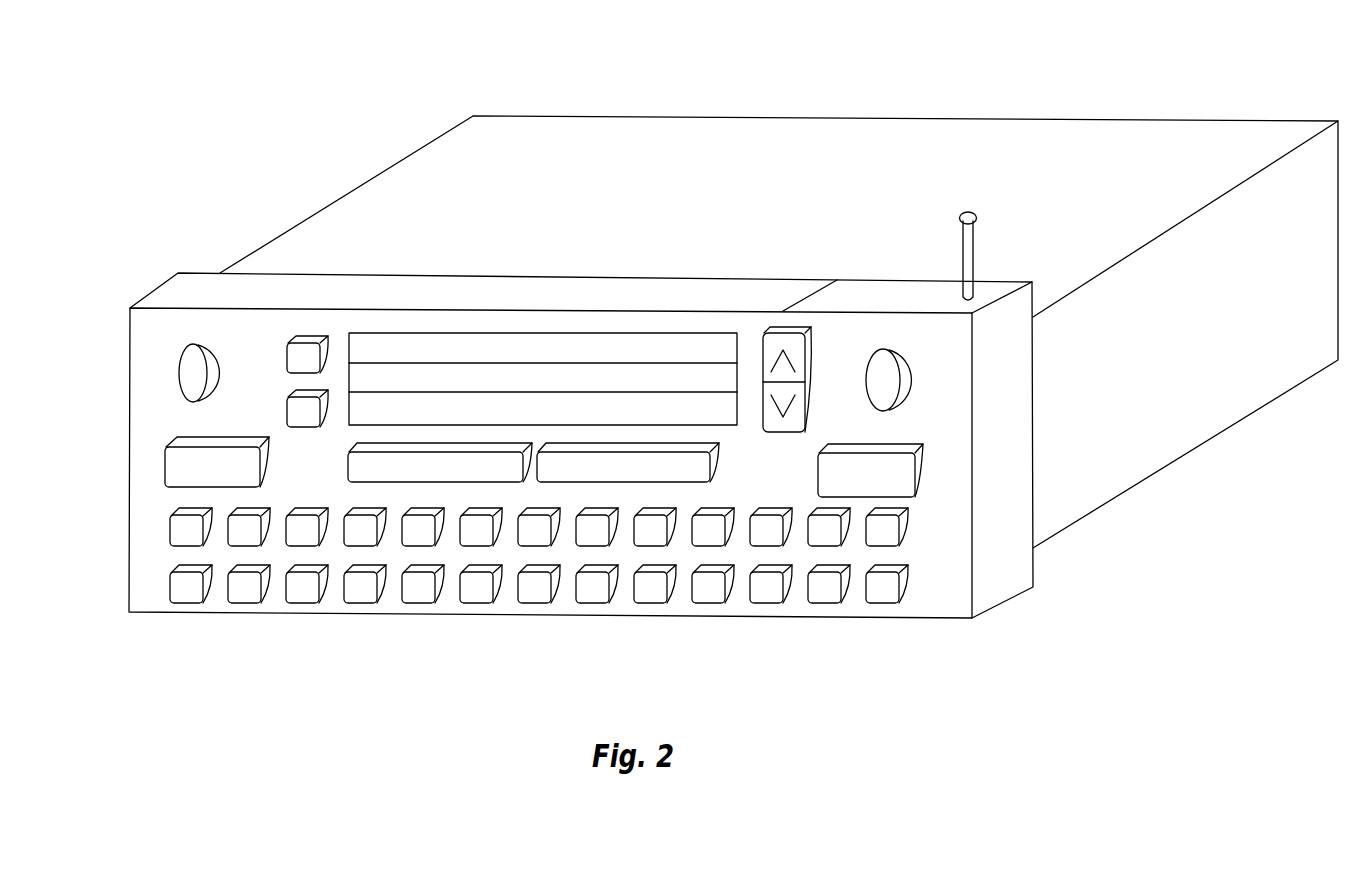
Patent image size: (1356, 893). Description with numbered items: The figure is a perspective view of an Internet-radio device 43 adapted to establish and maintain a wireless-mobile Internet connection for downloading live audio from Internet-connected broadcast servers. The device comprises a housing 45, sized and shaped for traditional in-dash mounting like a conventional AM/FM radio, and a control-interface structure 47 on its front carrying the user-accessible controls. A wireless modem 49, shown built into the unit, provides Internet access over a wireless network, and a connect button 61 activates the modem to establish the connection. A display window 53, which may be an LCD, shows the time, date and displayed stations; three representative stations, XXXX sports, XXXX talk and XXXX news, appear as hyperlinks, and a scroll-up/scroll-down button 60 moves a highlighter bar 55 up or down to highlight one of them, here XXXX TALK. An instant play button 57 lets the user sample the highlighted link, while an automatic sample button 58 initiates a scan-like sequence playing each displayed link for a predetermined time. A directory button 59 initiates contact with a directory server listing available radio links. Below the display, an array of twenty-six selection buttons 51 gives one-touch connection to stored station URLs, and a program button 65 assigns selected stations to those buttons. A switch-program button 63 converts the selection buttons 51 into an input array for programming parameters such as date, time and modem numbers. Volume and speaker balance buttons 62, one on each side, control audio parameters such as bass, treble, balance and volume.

The Internet-radio device 43 is at (266, 166).
The housing 45 is at (803, 117).
The control-interface structure 47 is at (129, 357).
The wireless modem 49 is at (907, 296).
The selection buttons 51 is at (566, 618).
The display window 53 is at (504, 332).
The highlighter bar 55 is at (667, 372).
The instant play button 57 is at (286, 362).
The automatic sample button 58 is at (286, 415).
The directory button 59 is at (719, 453).
The scroll-up/scroll-down button 60 is at (812, 382).
The connect button 61 is at (347, 458).
The volume and speaker balance buttons 62 is at (179, 375).
The switch-program button 63 is at (163, 467).
The program button 65 is at (922, 467).